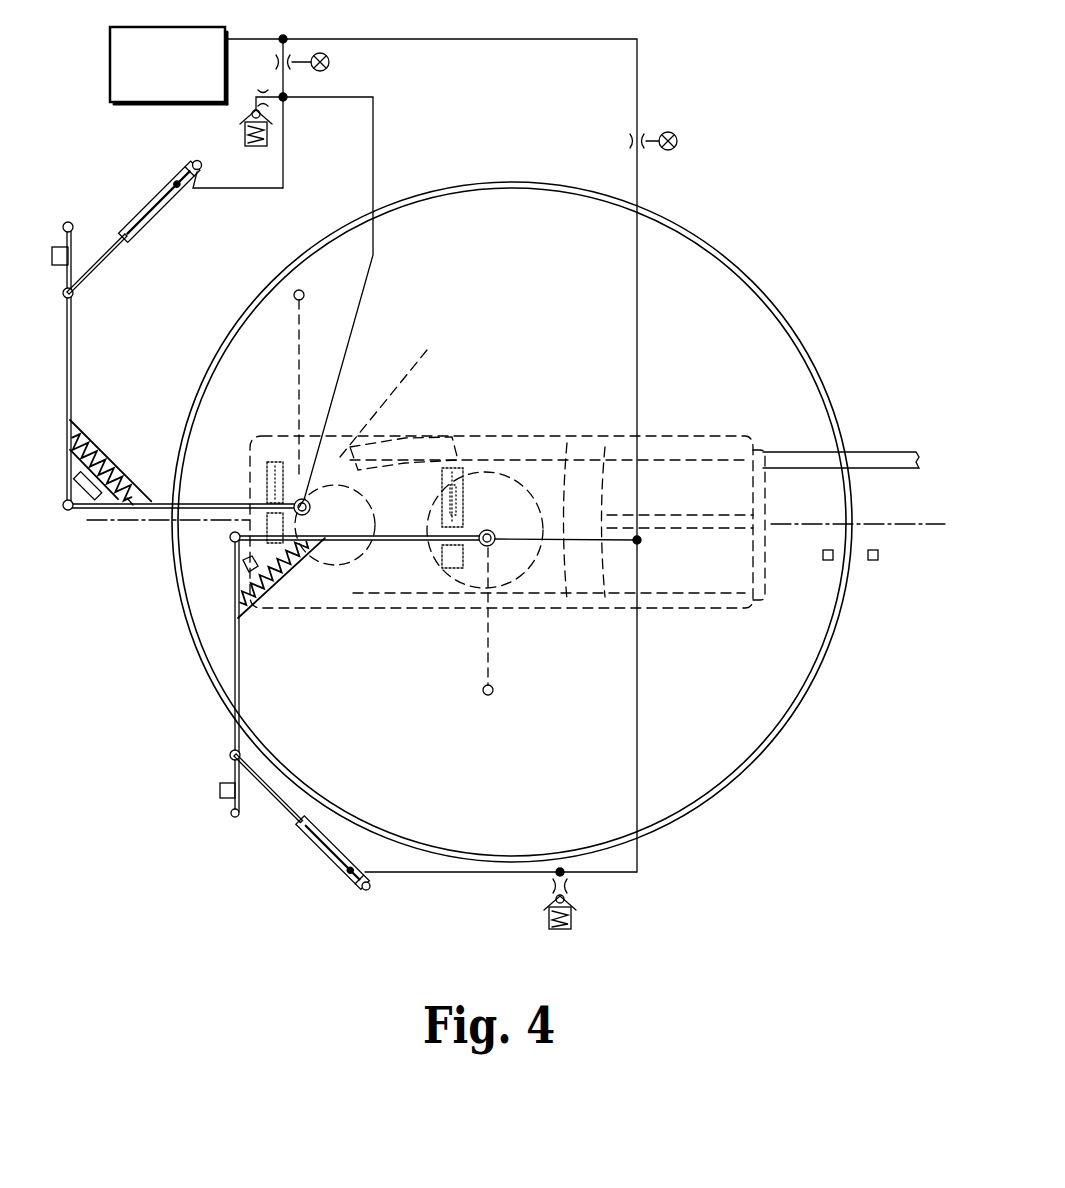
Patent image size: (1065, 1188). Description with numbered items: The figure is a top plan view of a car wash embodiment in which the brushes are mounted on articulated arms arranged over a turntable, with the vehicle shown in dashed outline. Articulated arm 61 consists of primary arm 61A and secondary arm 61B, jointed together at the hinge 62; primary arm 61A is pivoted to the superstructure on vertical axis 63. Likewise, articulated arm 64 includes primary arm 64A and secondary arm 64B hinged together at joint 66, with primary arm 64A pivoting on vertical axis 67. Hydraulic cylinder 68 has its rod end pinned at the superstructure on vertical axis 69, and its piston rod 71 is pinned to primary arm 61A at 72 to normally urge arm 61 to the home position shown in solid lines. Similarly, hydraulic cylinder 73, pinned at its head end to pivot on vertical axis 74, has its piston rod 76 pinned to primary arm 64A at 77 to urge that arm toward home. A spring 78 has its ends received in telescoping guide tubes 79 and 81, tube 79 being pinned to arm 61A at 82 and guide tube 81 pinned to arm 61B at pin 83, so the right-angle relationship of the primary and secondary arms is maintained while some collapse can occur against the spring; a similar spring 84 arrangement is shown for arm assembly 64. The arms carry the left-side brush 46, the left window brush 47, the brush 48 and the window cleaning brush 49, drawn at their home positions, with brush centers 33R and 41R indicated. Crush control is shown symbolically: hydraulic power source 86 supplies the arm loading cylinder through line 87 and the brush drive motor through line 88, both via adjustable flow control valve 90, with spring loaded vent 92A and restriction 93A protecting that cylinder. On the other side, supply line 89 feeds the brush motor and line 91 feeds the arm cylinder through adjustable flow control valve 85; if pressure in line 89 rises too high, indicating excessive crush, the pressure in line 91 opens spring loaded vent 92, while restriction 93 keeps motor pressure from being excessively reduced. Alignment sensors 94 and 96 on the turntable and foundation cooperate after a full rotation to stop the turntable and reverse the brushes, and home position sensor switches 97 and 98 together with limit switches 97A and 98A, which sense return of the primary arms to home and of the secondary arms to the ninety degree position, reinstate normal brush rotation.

The hydraulic power source 86 is at (178, 82).
The restriction 93A is at (273, 63).
The adjustable flow control valve 90 is at (287, 71).
The spring loaded vent 92A is at (244, 133).
The vertical axis 69 is at (202, 166).
The line 88 is at (373, 168).
The line 87 is at (263, 190).
The hydraulic cylinder 68 is at (152, 225).
The home position sensor switch 98 is at (56, 246).
The vertical axis 63 is at (74, 224).
The piston rod 71 is at (118, 246).
The pin 72 is at (74, 296).
The primary arm 61A is at (72, 345).
The pin 82 is at (90, 428).
The telescoping guide tube 79 is at (80, 423).
The spring 78 is at (121, 445).
The telescoping guide tube 81 is at (106, 460).
The left window brush 47 is at (275, 461).
The window cleaning brush 49 is at (467, 500).
The secondary arm 61B is at (226, 505).
The right rear wheel center 33R is at (321, 412).
The right front wheel center 41R is at (496, 531).
The supply line 89 is at (507, 479).
The joint 62 is at (66, 512).
The pin 83 is at (128, 500).
The joint 66 is at (230, 537).
The limit switch 98A is at (100, 500).
The limit switch 97A is at (242, 576).
The secondary arm 64B is at (414, 542).
The left-side brush 46 is at (328, 568).
The spring 84 is at (256, 576).
The brush 48 is at (523, 594).
The alignment sensor 94 is at (827, 562).
The alignment sensor 96 is at (876, 562).
The articulated arm 61 is at (183, 450).
The articulated arm 64 is at (305, 674).
The primary arm 64A is at (240, 688).
The pin 77 is at (230, 755).
The home position sensor switch 97 is at (220, 793).
The vertical axis 67 is at (234, 819).
The piston rod 76 is at (283, 805).
The hydraulic cylinder 73 is at (309, 846).
The vertical axis 74 is at (367, 892).
The line 91 is at (638, 752).
The restriction 93 is at (572, 890).
The spring loaded vent 92 is at (574, 922).
The adjustable flow control valve 85 is at (655, 156).